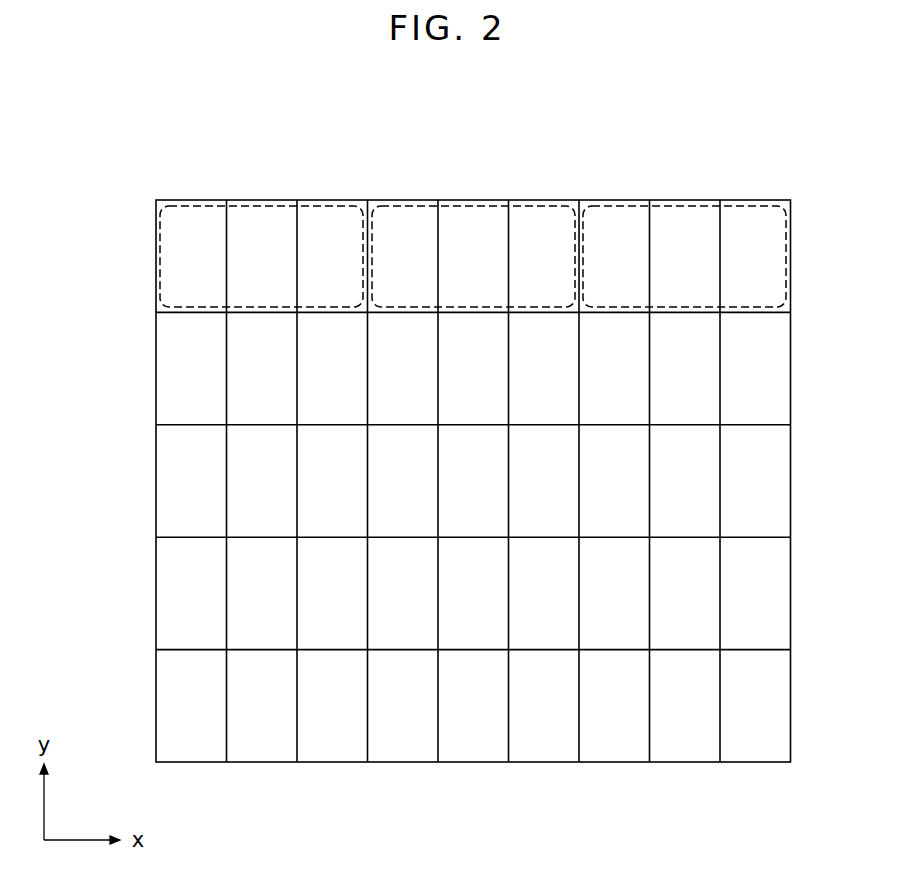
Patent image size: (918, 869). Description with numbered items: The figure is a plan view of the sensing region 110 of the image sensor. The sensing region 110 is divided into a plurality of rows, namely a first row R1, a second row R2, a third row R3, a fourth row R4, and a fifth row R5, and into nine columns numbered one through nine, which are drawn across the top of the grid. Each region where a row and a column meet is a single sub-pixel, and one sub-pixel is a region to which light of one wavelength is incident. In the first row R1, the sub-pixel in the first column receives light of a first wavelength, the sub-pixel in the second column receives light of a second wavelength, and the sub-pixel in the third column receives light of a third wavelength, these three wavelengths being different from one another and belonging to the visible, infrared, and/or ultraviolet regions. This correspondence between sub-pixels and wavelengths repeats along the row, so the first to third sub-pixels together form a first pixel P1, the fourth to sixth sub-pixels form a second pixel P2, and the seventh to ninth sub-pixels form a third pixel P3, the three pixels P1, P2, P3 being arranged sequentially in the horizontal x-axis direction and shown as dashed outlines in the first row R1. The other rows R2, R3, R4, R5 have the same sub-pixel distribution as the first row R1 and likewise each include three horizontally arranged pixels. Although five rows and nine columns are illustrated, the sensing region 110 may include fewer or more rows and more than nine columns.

The sensing region 110 is at (148, 180).
The first pixel P1 is at (356, 206).
The second pixel P2 is at (567, 206).
The third pixel P3 is at (779, 206).
The first row R1 is at (139, 200).
The second row R2 is at (139, 312).
The third row R3 is at (139, 425).
The fourth row R4 is at (139, 537).
The fifth row R5 is at (139, 650).